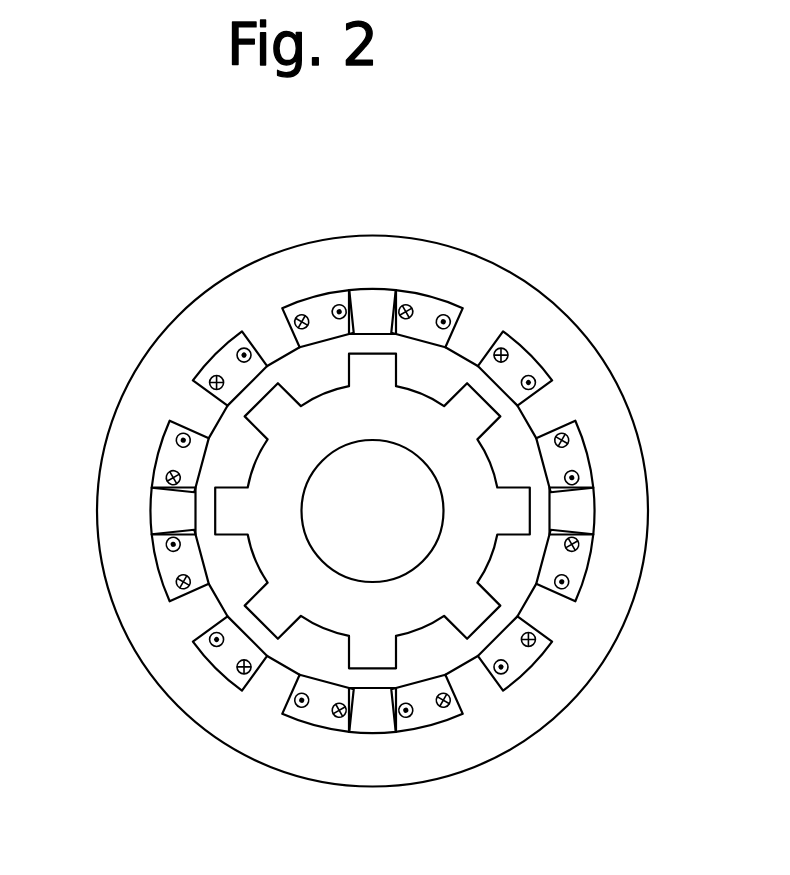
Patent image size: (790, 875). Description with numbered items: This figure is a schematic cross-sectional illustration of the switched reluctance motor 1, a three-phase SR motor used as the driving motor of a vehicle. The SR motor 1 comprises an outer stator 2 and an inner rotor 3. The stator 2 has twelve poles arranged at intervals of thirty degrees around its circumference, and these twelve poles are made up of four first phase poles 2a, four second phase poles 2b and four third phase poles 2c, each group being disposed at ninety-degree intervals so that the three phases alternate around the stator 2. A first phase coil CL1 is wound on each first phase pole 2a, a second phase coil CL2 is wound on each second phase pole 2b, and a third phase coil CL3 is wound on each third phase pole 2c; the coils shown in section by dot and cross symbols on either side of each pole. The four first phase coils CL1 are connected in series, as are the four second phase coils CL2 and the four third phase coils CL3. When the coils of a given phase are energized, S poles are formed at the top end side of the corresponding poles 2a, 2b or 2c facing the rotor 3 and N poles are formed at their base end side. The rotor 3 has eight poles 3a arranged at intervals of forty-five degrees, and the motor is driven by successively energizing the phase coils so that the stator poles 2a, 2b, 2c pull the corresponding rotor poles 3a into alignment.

The switched reluctance motor 1 is at (527, 257).
The stator 2 is at (650, 515).
The first phase pole 2a is at (385, 333).
The second phase pole 2b is at (455, 350).
The third phase pole 2c is at (283, 357).
The rotor 3 is at (373, 514).
The rotor pole 3a is at (367, 352).
The first phase coil CL1 is at (405, 312).
The second phase coil CL2 is at (501, 355).
The third phase coil CL3 is at (300, 322).